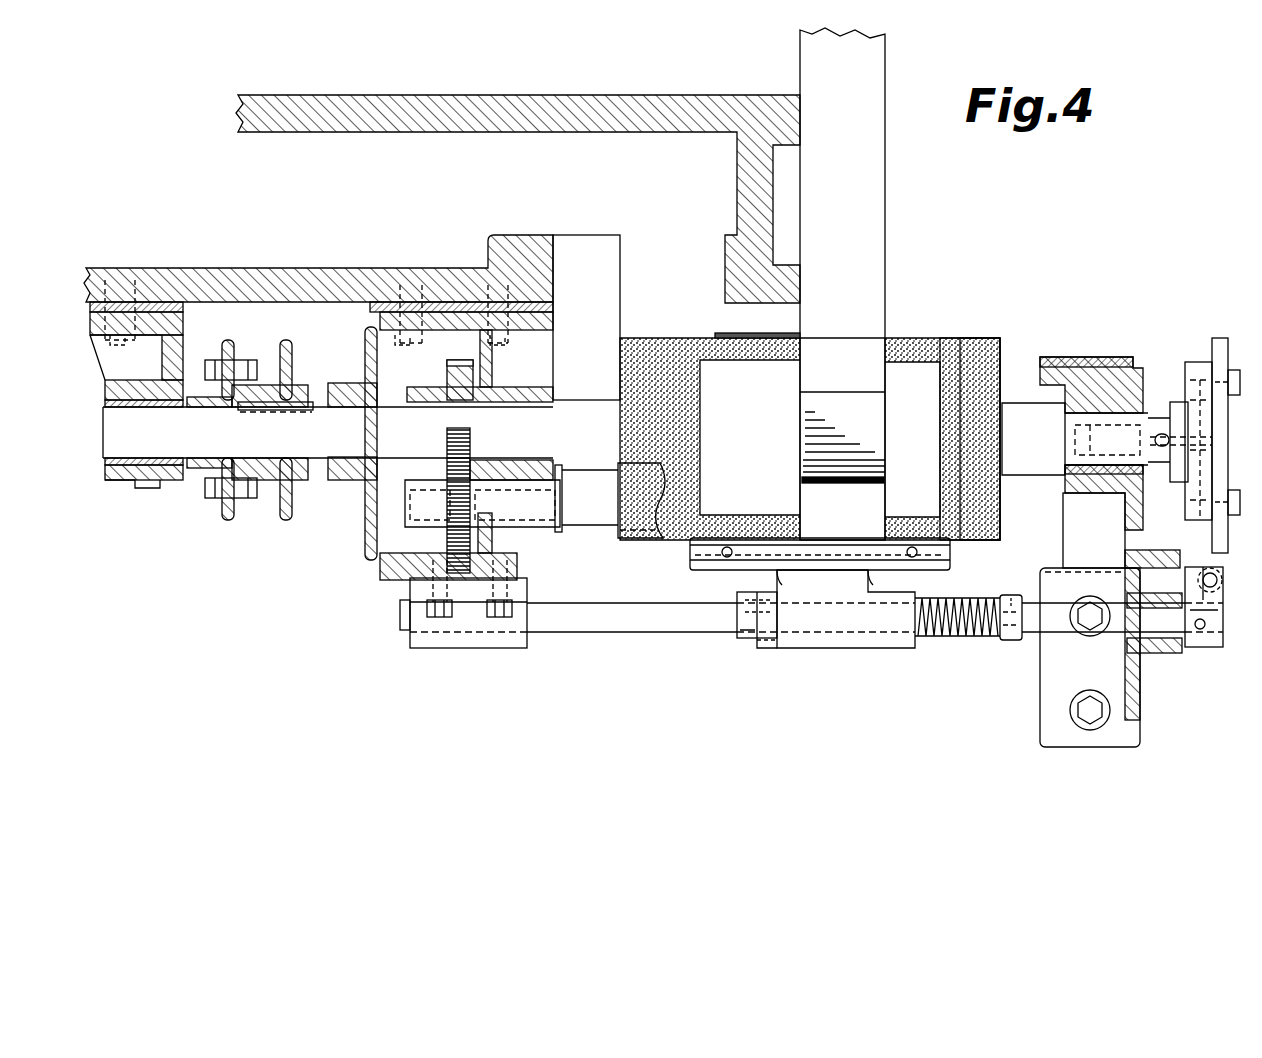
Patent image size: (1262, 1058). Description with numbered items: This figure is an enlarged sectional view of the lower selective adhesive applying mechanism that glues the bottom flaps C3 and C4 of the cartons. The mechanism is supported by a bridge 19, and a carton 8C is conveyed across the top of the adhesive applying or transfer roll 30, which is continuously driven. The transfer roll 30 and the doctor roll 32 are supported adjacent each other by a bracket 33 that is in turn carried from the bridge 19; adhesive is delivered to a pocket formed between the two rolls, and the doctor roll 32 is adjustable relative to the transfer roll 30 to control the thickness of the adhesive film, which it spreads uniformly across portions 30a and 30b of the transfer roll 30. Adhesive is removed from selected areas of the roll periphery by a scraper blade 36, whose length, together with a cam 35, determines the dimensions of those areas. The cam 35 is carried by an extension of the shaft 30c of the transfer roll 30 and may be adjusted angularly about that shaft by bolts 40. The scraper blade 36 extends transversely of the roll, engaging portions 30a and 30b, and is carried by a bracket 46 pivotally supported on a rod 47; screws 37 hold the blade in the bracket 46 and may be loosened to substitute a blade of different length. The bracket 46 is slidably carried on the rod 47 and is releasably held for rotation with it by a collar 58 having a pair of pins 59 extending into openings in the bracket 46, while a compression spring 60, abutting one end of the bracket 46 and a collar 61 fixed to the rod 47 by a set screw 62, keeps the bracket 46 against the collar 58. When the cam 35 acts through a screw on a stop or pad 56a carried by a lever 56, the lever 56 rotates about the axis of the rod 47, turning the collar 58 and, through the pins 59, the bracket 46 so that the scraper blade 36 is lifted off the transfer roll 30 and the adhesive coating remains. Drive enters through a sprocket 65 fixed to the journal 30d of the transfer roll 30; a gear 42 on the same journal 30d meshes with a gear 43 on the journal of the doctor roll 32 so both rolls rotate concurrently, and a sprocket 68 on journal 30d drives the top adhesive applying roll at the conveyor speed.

The bridge 19 is at (555, 96).
The carton 8C is at (830, 190).
The portion of transfer roll 30b is at (636, 340).
The bottom flap C3 is at (752, 333).
The bottom flap C4 is at (935, 338).
The portion of transfer roll 30a is at (1002, 347).
The transfer roll 30 is at (1010, 397).
The shaft 30c is at (1158, 420).
The journal 30d is at (330, 452).
The cam 35 is at (1212, 348).
The bolt 40 is at (1233, 370).
The gear 42 is at (447, 375).
The gear 43 is at (472, 442).
The sprocket 68 is at (226, 522).
The sprocket 65 is at (291, 522).
The doctor roll 32 is at (622, 494).
The scraper blade 36 is at (690, 549).
The screw 37 is at (690, 562).
The collar 58 is at (737, 599).
The pin 59 is at (775, 599).
The rod 47 is at (640, 634).
The bracket 46 is at (826, 646).
The compression spring 60 is at (956, 636).
The collar 61 is at (1013, 642).
The set screw 62 is at (1011, 597).
The bracket 33 is at (1138, 697).
The lever 56 is at (1212, 648).
The pad 56a is at (1218, 580).